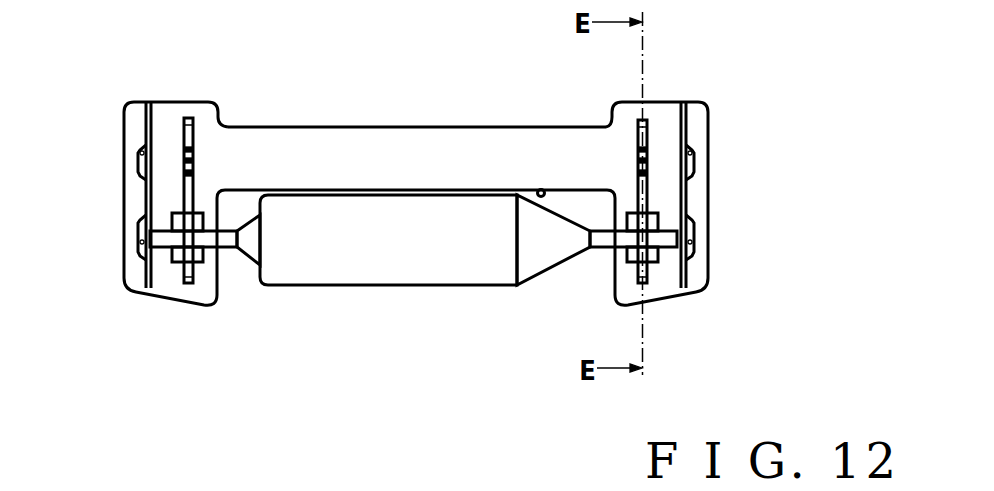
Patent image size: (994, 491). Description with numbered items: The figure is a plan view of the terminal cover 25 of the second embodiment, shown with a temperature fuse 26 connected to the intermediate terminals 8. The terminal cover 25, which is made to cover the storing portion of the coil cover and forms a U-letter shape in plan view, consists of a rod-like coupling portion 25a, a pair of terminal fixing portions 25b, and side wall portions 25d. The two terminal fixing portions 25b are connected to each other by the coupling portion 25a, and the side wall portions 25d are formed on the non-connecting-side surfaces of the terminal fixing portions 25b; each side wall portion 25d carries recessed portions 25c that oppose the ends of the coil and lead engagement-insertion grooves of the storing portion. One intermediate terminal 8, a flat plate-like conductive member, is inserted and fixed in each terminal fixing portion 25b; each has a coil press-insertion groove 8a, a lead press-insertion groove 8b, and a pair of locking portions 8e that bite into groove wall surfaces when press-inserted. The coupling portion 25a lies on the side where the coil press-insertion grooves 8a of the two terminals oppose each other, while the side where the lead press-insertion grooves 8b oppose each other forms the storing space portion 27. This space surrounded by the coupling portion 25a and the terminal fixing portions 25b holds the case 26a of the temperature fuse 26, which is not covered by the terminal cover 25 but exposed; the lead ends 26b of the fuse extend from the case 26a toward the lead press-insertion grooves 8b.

The intermediate terminal 8 is at (182, 200).
The coil press-insertion groove 8a is at (197, 162).
The lead press-insertion groove 8b is at (143, 289).
The locking portion 8e is at (190, 117).
The terminal cover 25 is at (663, 117).
The coupling portion 25a is at (433, 155).
The terminal fixing portion 25b is at (163, 283).
The recessed portion 25c is at (140, 158).
The side wall portion 25d is at (130, 130).
The temperature fuse 26 is at (336, 292).
The case 26a is at (410, 267).
The fuse tapered end 26b is at (225, 240).
The storing space portion 27 is at (540, 186).